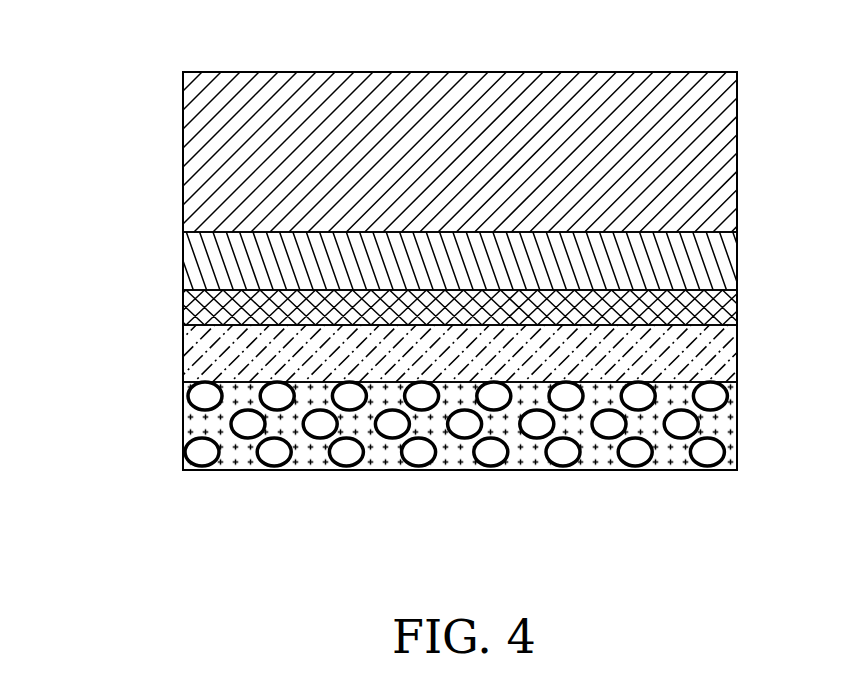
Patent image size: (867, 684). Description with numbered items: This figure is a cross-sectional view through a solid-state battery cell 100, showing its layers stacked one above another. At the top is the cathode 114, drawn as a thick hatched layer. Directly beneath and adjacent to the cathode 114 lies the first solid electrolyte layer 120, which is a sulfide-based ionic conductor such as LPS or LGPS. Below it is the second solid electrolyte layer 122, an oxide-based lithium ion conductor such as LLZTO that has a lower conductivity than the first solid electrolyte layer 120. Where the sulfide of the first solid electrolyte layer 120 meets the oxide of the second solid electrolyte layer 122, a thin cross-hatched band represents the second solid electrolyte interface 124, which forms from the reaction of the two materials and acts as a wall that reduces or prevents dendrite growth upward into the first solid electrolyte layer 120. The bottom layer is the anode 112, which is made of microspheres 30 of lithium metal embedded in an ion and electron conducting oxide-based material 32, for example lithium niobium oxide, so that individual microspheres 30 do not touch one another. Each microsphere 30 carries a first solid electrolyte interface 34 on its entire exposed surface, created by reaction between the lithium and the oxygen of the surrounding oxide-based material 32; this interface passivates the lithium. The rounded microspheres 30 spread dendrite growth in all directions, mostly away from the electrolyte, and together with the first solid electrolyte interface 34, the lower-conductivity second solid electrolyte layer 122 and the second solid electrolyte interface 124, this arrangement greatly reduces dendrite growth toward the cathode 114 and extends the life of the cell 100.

The solid-state battery cell 100 is at (101, 61).
The cathode 114 is at (738, 155).
The first solid electrolyte layer 120 is at (738, 257).
The second solid electrolyte interface 124 is at (738, 305).
The second solid electrolyte layer 122 is at (738, 358).
The composite layer 112 is at (492, 461).
The ion and electron conducting oxide-based material 32 is at (528, 450).
The first solid electrolyte interface 34 is at (403, 456).
The microspheres 30 is at (637, 452).